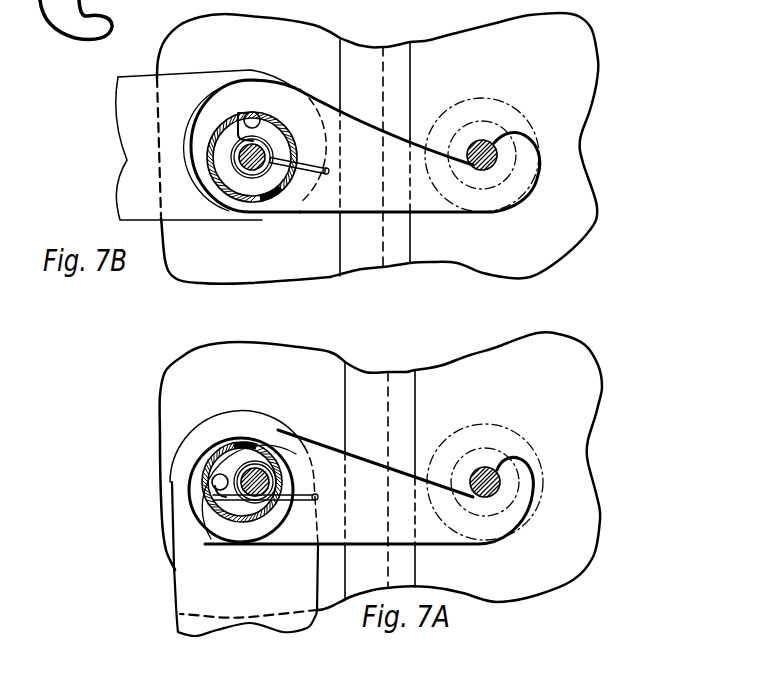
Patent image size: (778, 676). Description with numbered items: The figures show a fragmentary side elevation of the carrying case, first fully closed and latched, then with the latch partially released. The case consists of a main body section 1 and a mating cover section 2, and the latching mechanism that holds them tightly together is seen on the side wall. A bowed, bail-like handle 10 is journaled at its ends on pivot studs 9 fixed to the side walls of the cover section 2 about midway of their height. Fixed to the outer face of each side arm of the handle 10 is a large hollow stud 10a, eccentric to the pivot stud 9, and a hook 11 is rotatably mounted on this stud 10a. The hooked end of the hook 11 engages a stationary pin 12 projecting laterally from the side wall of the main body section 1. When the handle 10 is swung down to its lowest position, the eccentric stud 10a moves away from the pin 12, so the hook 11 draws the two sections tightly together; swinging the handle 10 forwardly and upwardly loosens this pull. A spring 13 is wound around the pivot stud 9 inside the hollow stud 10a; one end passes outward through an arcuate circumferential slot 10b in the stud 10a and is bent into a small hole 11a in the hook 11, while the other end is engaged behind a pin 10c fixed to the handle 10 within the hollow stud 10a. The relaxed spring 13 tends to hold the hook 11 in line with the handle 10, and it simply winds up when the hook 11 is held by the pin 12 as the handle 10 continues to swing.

In FIG. 7B, the main body section 1 is at (457, 53).
In FIG. 7A, the main body section 1 is at (448, 377).
In FIG. 7B, the cover section 2 is at (268, 26).
In FIG. 7A, the cover section 2 is at (183, 400).
In FIG. 7B, the pivot studs 9 is at (251, 171).
In FIG. 7A, the pivot studs 9 is at (242, 500).
In FIG. 7B, the handle 10 is at (126, 186).
In FIG. 7A, the handle 10 is at (187, 624).
In FIG. 7B, the hollow studs 10a is at (211, 127).
In FIG. 7A, the hollow studs 10a is at (245, 521).
In FIG. 7B, the arcuate circumferential slot 10b is at (274, 192).
In FIG. 7A, the arcuate circumferential slot 10b is at (270, 445).
In FIG. 7B, the pin 10c is at (238, 110).
In FIG. 7A, the pin 10c is at (213, 481).
In FIG. 7B, the hooks 11 is at (437, 197).
In FIG. 7A, the hooks 11 is at (437, 527).
In FIG. 7B, the small hole 11a is at (326, 170).
In FIG. 7A, the small hole 11a is at (313, 500).
In FIG. 7B, the stationary pins 12 is at (484, 153).
In FIG. 7A, the stationary pins 12 is at (498, 481).
In FIG. 7B, the springs 13 is at (265, 140).
In FIG. 7A, the springs 13 is at (270, 472).